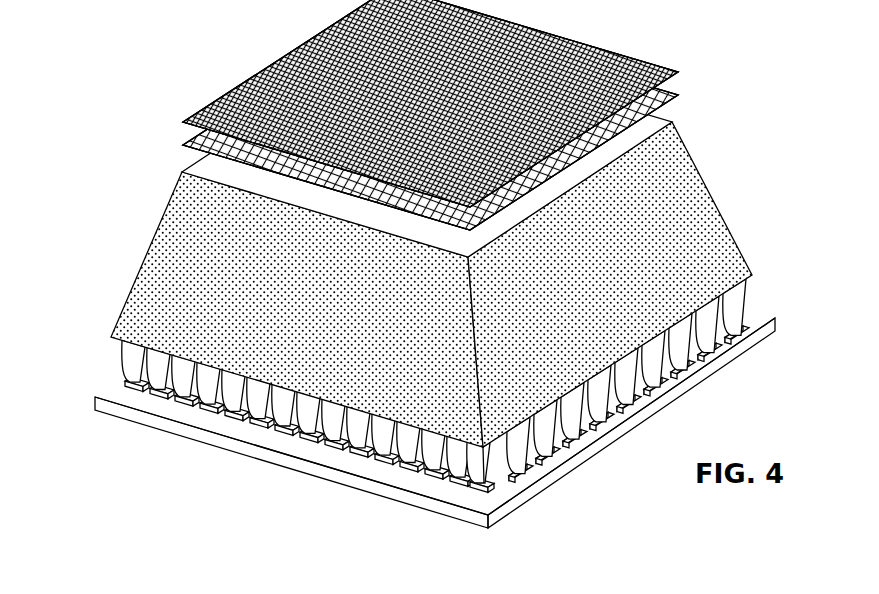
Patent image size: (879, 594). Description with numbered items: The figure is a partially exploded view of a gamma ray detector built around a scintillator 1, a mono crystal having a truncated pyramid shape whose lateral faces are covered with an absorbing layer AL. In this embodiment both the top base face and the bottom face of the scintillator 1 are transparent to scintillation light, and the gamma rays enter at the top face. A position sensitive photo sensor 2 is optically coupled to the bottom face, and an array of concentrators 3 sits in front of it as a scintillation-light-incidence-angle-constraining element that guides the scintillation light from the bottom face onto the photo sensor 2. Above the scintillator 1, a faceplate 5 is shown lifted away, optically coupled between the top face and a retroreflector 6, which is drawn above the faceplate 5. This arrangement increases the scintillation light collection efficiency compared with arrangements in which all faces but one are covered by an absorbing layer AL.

The scintillator 1 is at (457, 242).
The position sensitive photo sensor 2 is at (115, 393).
The array of concentrators 3 is at (733, 307).
The faceplate 5 is at (678, 96).
The retroreflector 6 is at (290, 53).
The absorbing layer AL is at (183, 258).